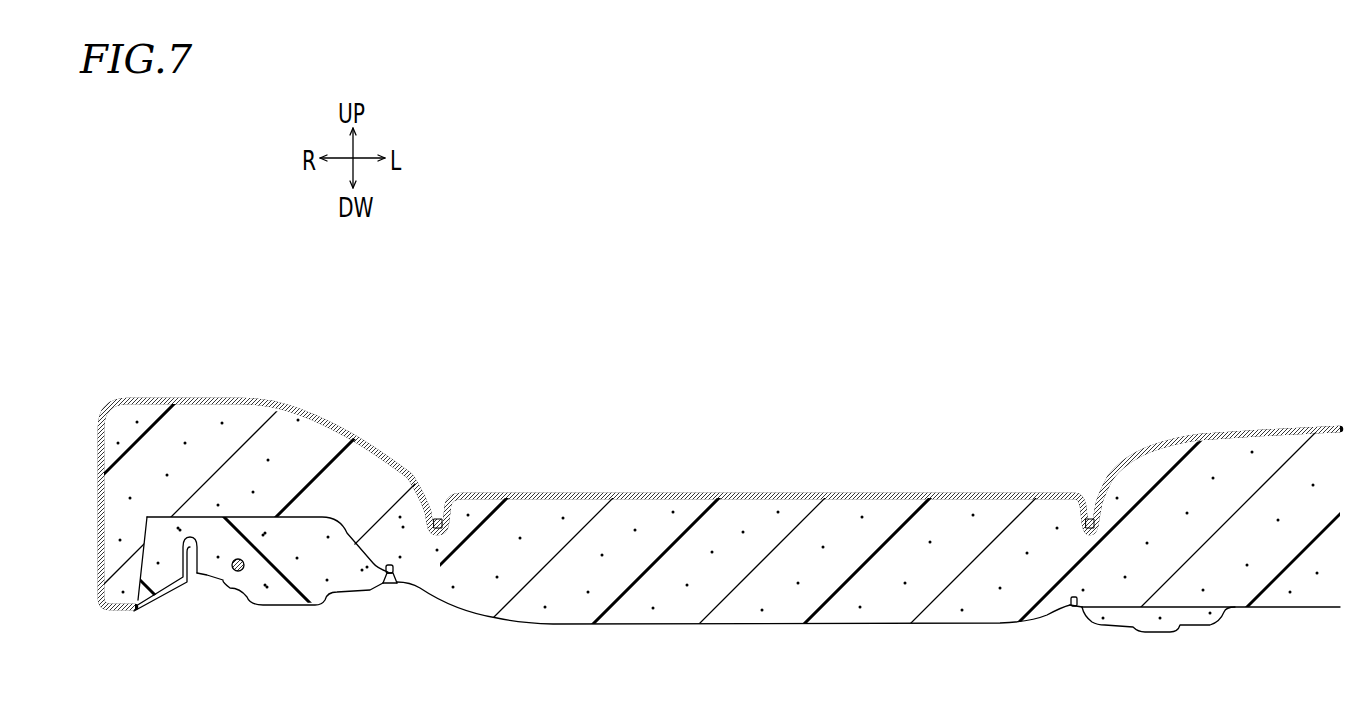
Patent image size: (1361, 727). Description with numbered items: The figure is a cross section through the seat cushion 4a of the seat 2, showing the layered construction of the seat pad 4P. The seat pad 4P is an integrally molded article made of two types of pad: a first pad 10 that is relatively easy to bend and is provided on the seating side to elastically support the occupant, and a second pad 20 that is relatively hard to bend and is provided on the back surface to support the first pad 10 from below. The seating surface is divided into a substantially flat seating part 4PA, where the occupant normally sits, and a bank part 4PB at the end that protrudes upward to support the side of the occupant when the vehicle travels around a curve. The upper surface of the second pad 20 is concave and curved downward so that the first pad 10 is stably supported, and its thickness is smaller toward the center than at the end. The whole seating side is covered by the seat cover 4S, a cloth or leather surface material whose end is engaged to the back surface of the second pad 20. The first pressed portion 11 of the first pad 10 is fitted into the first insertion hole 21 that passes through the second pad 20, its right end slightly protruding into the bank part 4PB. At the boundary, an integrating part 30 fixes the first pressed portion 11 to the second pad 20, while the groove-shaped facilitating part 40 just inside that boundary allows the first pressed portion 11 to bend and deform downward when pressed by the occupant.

The seat 2 is at (680, 458).
The seat cushion 4a is at (762, 389).
The seating part 4PA is at (1334, 283).
The bank part 4PB is at (437, 528).
The seat cover 4S is at (227, 400).
The seat pad 4P is at (378, 366).
The first pad 10 is at (310, 452).
The first pressed portion 11 is at (988, 520).
The second pad 20 is at (343, 547).
The first insertion hole 21 is at (385, 580).
The integrating part 30 is at (388, 584).
The facilitating part 40 is at (395, 576).